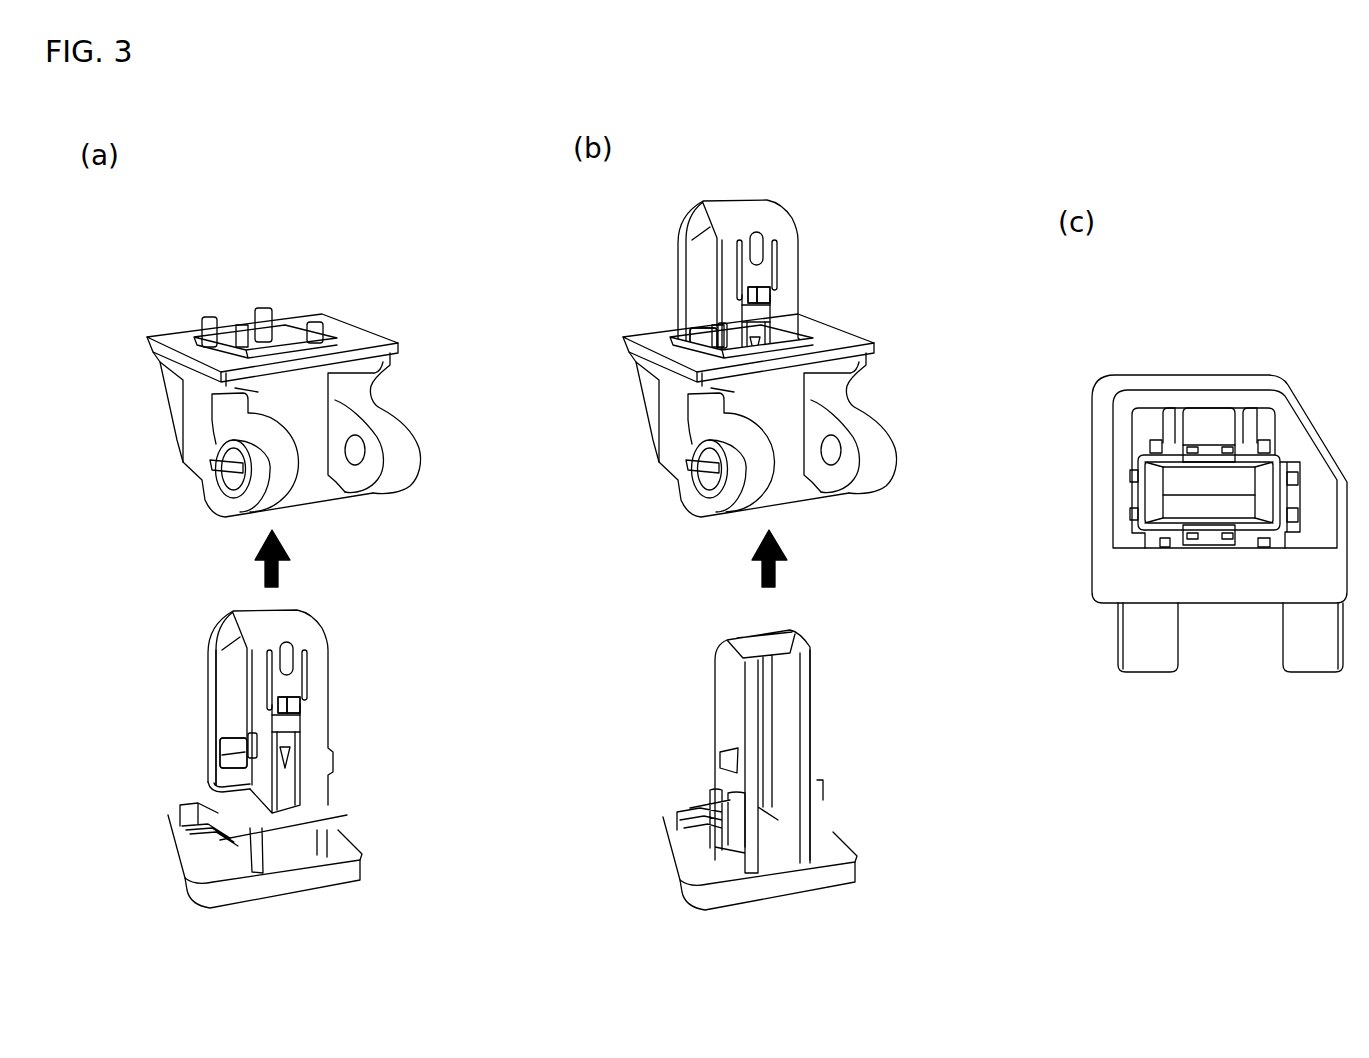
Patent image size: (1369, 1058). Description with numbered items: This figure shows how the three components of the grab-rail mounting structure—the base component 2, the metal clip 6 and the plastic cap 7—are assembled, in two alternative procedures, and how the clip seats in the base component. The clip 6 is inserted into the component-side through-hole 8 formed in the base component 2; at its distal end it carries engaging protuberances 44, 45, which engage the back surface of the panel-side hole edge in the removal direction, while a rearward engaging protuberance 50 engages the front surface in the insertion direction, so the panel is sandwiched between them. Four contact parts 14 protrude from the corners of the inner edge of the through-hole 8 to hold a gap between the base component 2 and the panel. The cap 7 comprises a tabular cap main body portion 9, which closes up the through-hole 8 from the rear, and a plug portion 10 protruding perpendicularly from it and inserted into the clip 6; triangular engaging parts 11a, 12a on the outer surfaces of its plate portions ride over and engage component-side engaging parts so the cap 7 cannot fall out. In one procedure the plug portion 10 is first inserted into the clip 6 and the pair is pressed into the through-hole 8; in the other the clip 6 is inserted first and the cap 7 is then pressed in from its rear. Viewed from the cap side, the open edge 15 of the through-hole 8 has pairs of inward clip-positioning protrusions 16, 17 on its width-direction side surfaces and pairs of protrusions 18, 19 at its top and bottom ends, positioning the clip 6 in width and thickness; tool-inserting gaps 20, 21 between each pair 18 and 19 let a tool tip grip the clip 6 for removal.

The base component 2 is at (393, 323).
The clip 6 is at (348, 650).
The cap 7 is at (140, 837).
The component-side through-hole 8 is at (245, 335).
The cap main body portion 9 is at (178, 863).
The plug portion 10 is at (230, 700).
The engaging part 11a is at (723, 760).
The engaging part 12a is at (817, 753).
The contact part 14 is at (207, 327).
The open edge 15 is at (1155, 430).
The clip-positioning protrusion 16 is at (1132, 467).
The clip-positioning protrusion 17 is at (1293, 510).
The clip-positioning protrusion 18 is at (1173, 438).
The clip-positioning protrusion 19 is at (1173, 540).
The tool-inserting gap 20 is at (1210, 443).
The tool-inserting gap 21 is at (1210, 540).
The engaging protuberance 44 is at (282, 710).
The engaging protuberance 45 is at (302, 702).
The engaging protuberance 50 is at (245, 742).